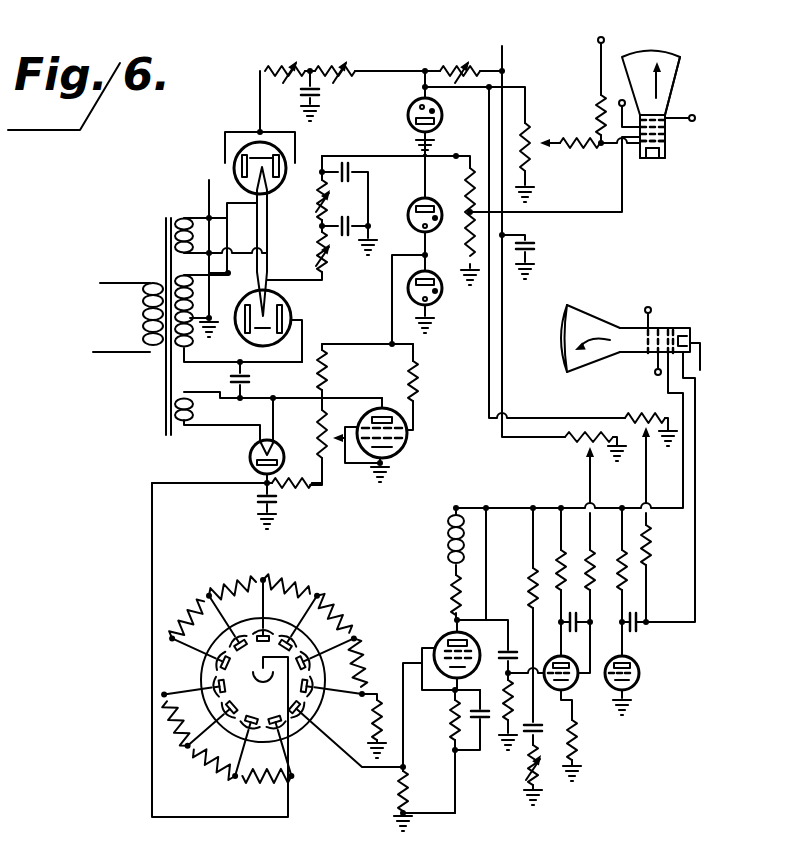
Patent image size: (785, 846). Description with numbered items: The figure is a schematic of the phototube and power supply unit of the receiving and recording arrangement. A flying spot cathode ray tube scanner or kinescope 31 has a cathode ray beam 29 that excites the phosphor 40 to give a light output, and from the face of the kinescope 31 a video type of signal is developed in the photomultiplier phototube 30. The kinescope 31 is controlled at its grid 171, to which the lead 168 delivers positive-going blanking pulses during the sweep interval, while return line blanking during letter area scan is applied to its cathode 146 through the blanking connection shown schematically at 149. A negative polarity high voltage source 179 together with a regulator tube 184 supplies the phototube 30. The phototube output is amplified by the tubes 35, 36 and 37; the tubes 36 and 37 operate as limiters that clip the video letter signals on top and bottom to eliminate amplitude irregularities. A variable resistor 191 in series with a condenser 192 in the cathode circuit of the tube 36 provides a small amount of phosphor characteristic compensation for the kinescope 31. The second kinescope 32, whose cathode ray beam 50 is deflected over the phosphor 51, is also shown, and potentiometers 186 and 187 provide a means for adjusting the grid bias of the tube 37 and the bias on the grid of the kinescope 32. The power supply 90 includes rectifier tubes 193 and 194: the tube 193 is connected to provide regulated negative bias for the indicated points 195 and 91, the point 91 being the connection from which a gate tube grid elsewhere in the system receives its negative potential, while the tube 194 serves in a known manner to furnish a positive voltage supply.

The indicated point 195 is at (425, 71).
The negative potential connection 91 is at (505, 50).
The lead 168 is at (599, 66).
The phosphor 40 is at (645, 56).
The cathode ray beam 29 is at (672, 78).
The flying spot cathode ray tube scanner (kinescope) 31 is at (683, 99).
The grid 171 is at (667, 142).
The blanking connection 149 is at (656, 160).
The cathode 146 is at (653, 167).
The power supply source 90 is at (180, 210).
The rectifier tube 193 is at (322, 201).
The rectifier tube 194 is at (295, 300).
The negative polarity high voltage source 179 is at (244, 462).
The regulator tube 184 is at (405, 450).
The phosphor 51 is at (588, 308).
The kinescope 32 is at (601, 310).
The cathode ray beam 50 is at (580, 360).
The potentiometer 187 is at (648, 412).
The potentiometer 186 is at (578, 450).
The amplifier tube 35 is at (440, 634).
The phototube 30 is at (304, 740).
The condenser 192 is at (524, 742).
The variable resistor 191 is at (527, 778).
The amplifier tube 36 is at (576, 692).
The amplifier tube 37 is at (641, 684).